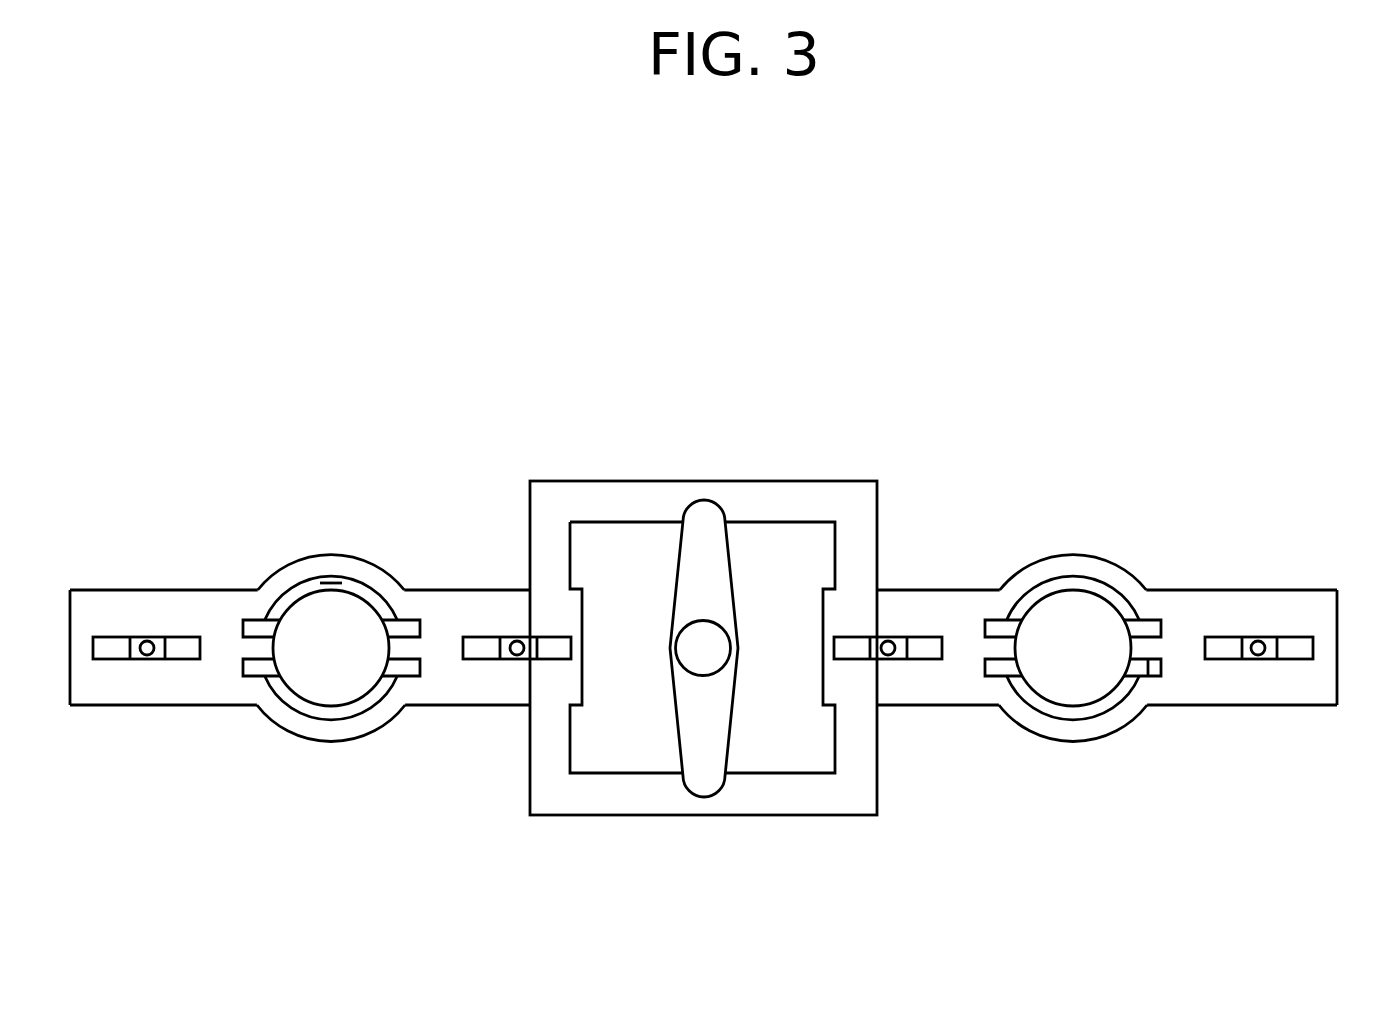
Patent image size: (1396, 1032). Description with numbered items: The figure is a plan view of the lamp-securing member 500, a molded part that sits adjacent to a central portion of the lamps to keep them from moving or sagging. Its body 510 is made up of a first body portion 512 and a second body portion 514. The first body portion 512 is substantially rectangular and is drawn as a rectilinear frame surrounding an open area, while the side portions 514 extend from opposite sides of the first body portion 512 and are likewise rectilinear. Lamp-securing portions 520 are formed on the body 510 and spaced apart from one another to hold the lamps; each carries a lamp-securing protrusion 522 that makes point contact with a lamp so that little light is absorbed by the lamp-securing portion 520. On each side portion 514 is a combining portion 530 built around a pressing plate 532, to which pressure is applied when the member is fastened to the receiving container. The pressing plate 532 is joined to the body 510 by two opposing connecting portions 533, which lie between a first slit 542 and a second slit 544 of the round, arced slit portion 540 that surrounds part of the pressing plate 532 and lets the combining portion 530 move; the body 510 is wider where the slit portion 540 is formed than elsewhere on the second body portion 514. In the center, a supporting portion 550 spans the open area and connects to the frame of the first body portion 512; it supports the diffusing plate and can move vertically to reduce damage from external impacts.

The lamp-securing member 500 is at (850, 345).
The body 510 is at (953, 613).
The first body portion 512 is at (818, 800).
The second body portion 514 is at (108, 692).
The lamp-securing portion 520 is at (1288, 615).
The lamp-securing protrusion 522 is at (1258, 640).
The combining portion 530 is at (395, 577).
The pressing plate 532 is at (332, 658).
The connecting portion 533 is at (1146, 652).
The slit portion 540 is at (333, 583).
The first slit 542 is at (1066, 585).
The second slit 544 is at (1060, 710).
The supporting portion 550 is at (695, 647).